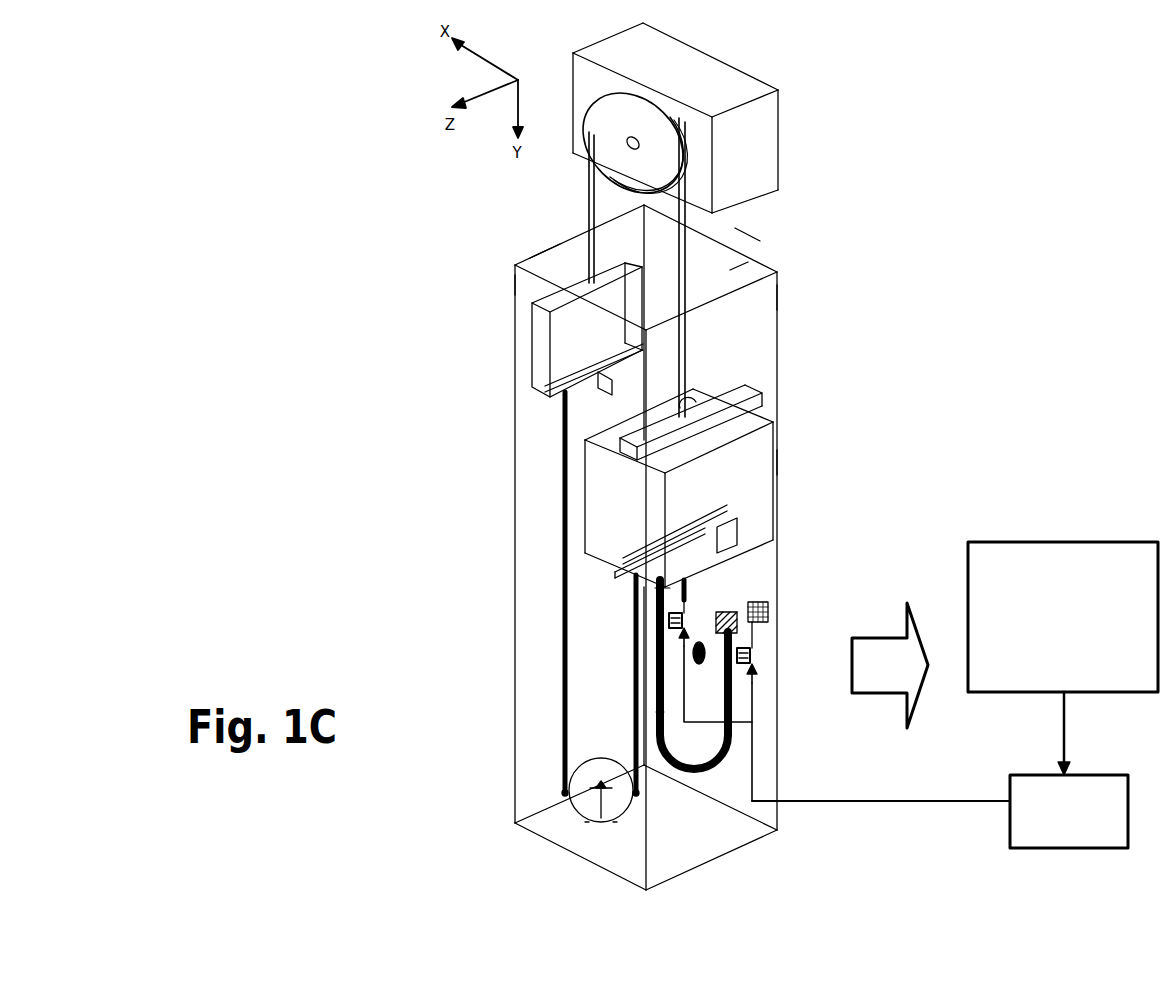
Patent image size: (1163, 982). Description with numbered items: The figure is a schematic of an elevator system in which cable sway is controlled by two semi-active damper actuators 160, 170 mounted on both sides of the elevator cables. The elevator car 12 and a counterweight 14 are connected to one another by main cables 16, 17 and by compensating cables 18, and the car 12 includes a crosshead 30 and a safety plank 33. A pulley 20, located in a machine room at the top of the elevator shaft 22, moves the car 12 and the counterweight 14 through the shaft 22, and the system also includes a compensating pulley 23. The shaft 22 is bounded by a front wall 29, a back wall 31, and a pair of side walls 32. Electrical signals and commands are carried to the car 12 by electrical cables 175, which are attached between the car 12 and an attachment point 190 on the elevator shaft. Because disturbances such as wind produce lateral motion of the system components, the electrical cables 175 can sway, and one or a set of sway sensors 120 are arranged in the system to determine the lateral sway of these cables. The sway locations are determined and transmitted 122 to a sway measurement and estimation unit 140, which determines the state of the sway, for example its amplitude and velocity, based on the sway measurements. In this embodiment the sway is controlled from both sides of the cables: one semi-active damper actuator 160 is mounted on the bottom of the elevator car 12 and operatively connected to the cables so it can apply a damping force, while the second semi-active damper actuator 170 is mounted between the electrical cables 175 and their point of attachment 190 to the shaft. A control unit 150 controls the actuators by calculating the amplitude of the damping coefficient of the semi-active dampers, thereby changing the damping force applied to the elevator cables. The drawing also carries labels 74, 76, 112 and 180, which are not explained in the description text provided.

The elevator car 12 is at (784, 501).
The counterweight 14 is at (604, 271).
The main cable 16 is at (588, 168).
The main cable 17 is at (678, 323).
The compensating cables 18 is at (640, 718).
The pulley 20 is at (672, 81).
The elevator shaft 22 is at (742, 270).
The compensating pulley 23 is at (622, 797).
The front wall 29 is at (764, 296).
The crosshead 30 is at (728, 390).
The back wall 31 is at (541, 254).
The side walls 32 is at (514, 281).
The safety plank 33 is at (640, 582).
The elevator car 74 is at (600, 514).
The car guide 76 is at (780, 463).
The drive sheave 112 is at (682, 124).
The sway sensors 120 is at (682, 642).
The transmission of sway locations 122 is at (876, 634).
The sway measurement and estimation unit 140 is at (1037, 541).
The control unit 150 is at (1008, 826).
The semi-active damper actuator 160 is at (665, 590).
The semi-active damper actuator 170 is at (756, 650).
The electrical cables 175 is at (655, 722).
The sensor 180 is at (697, 642).
The attachment point 190 is at (717, 611).